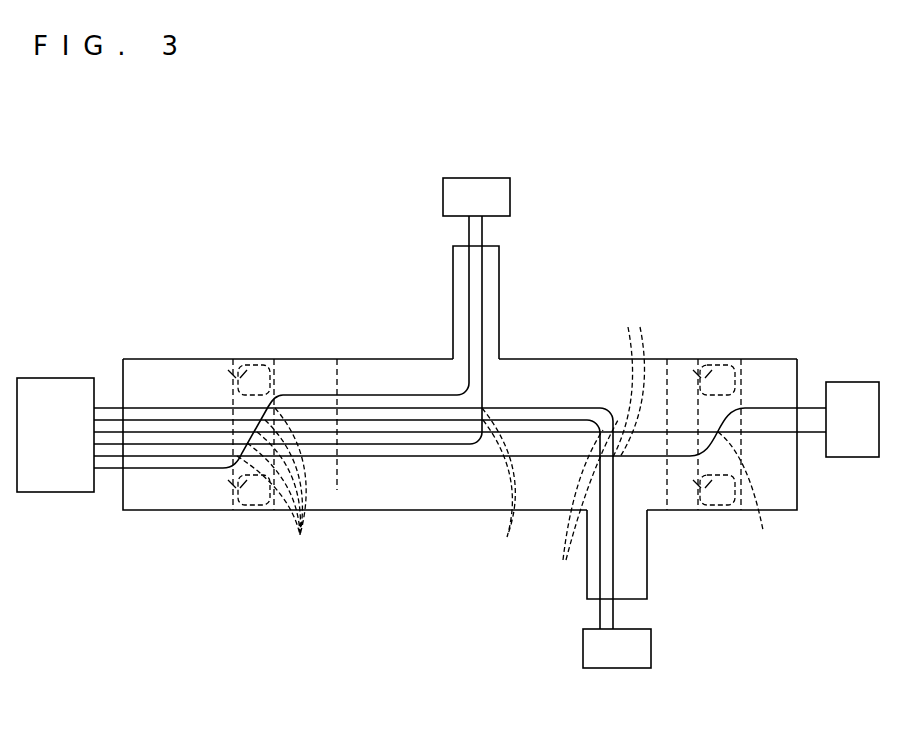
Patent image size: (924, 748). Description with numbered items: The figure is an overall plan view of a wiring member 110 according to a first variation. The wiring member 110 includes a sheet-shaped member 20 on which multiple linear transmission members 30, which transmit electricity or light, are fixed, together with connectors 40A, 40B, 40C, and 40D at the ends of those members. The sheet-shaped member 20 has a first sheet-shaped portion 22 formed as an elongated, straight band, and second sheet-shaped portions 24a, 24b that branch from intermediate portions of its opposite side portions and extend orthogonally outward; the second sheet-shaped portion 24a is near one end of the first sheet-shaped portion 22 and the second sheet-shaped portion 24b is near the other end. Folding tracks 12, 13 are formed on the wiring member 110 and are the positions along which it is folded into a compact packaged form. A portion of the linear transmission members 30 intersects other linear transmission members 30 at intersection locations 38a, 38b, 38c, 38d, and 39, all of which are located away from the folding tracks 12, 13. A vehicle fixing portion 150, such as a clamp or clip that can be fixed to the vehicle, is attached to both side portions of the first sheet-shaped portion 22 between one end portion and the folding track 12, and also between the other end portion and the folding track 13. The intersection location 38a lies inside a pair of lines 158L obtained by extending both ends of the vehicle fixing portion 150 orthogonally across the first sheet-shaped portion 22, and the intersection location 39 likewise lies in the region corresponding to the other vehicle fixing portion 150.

The wiring member 110 is at (345, 189).
The folding track 12 is at (343, 493).
The folding track 13 is at (667, 512).
The sheet-shaped member 20 is at (415, 510).
The first sheet-shaped portion 22 is at (407, 358).
The second sheet-shaped portion 24a is at (499, 275).
The second sheet-shaped portion 24b is at (647, 580).
The linear transmission member 30 is at (145, 406).
The intersection location 38a is at (282, 489).
The intersection location 38b is at (507, 487).
The intersection location 38c is at (625, 378).
The intersection location 38d is at (579, 507).
The intersection location 39 is at (748, 499).
The connector 40A is at (57, 377).
The connector 40B is at (510, 197).
The connector 40C is at (651, 648).
The connector 40D is at (853, 460).
The vehicle fixing portion 150 is at (254, 360).
The line 158L is at (217, 356).